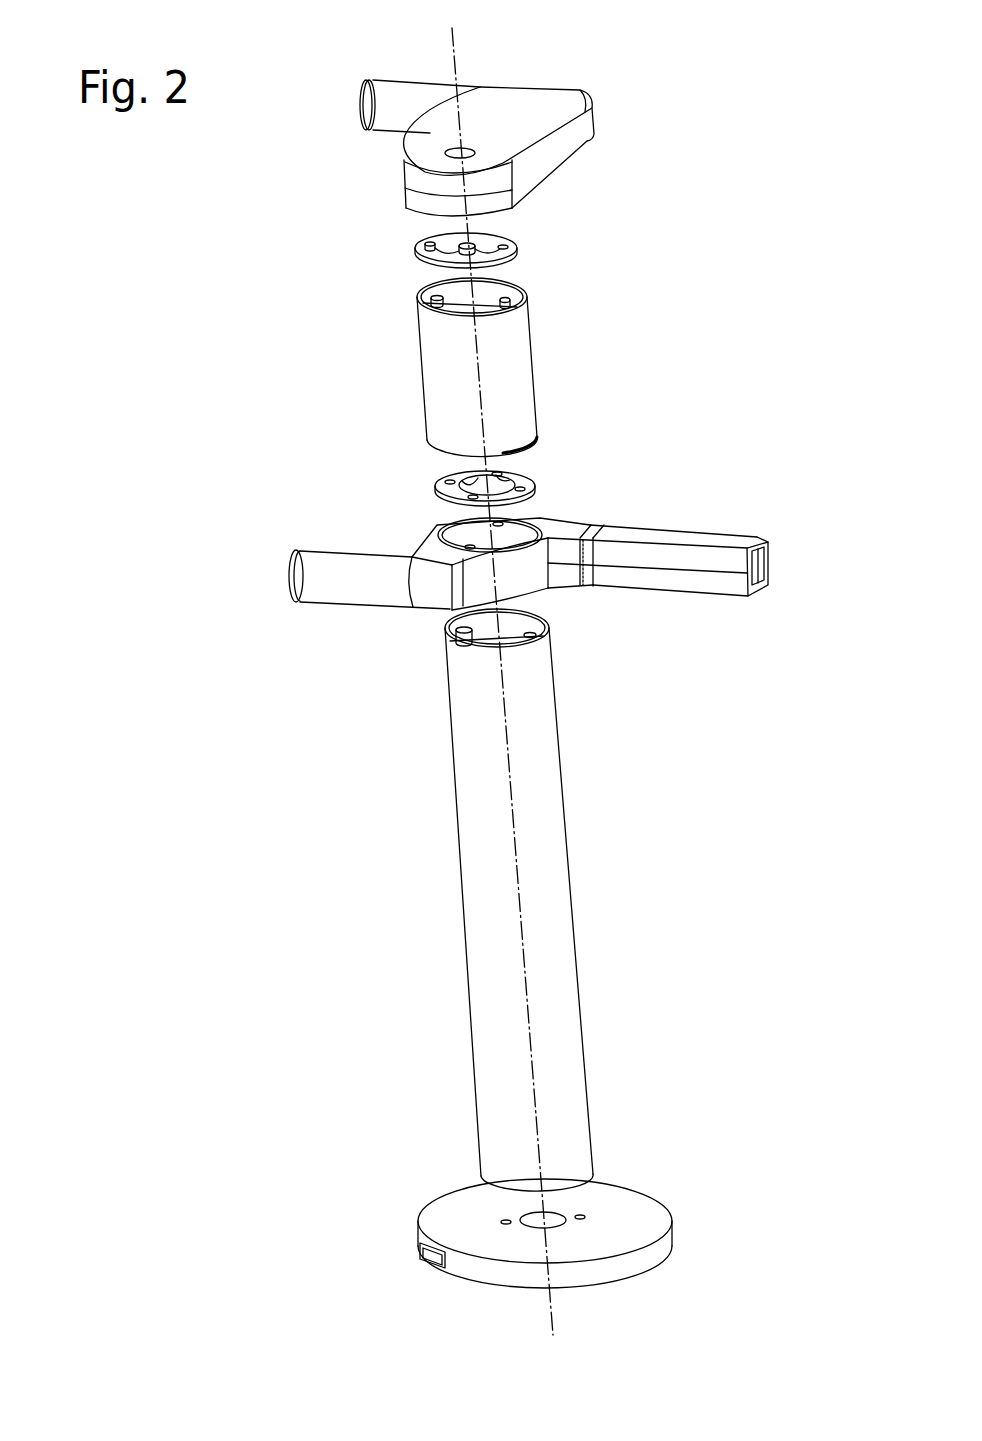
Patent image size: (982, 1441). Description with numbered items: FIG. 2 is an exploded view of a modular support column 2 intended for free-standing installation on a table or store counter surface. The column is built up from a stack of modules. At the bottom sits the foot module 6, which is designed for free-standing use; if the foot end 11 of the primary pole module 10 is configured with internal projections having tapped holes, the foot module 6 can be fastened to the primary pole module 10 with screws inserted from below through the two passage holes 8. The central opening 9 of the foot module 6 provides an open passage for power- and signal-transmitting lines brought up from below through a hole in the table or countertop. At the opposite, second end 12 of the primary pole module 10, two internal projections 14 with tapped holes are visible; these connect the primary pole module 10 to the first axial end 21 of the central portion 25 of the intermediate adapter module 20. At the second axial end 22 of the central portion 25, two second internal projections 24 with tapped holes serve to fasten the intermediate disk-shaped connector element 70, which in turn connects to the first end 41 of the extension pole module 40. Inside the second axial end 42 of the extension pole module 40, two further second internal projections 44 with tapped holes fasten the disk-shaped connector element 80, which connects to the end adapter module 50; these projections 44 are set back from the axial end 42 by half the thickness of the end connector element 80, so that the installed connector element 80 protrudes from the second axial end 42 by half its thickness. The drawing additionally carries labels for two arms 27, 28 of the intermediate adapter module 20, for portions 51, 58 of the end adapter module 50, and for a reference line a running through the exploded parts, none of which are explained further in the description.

The modular support column 2 is at (296, 901).
The foot module 6 is at (603, 1238).
The passage holes 8 is at (578, 1219).
The central opening 9 is at (553, 1218).
The primary pole module 10 is at (548, 945).
The foot end 11 is at (513, 1192).
The second end 12 is at (513, 645).
The internal projections 14 is at (523, 633).
The intermediate adapter module 20 is at (570, 528).
The first axial end 21 is at (525, 595).
The second axial end 22 is at (447, 525).
The second internal projections 24 is at (518, 517).
The central portion 25 is at (510, 562).
The square arm 27 is at (742, 537).
The round arm 28 is at (372, 583).
The extension pole module 40 is at (447, 371).
The first end 41 is at (505, 453).
The second axial end 42 is at (513, 280).
The second internal projections 44 is at (437, 297).
The end adapter module 50 is at (420, 182).
The arm of head 51 is at (503, 122).
The round tube of head 58 is at (397, 108).
The intermediate disk-shaped connector element 70 is at (530, 480).
The disk-shaped connector element 80 is at (480, 237).
The longitudinal axis a is at (501, 669).